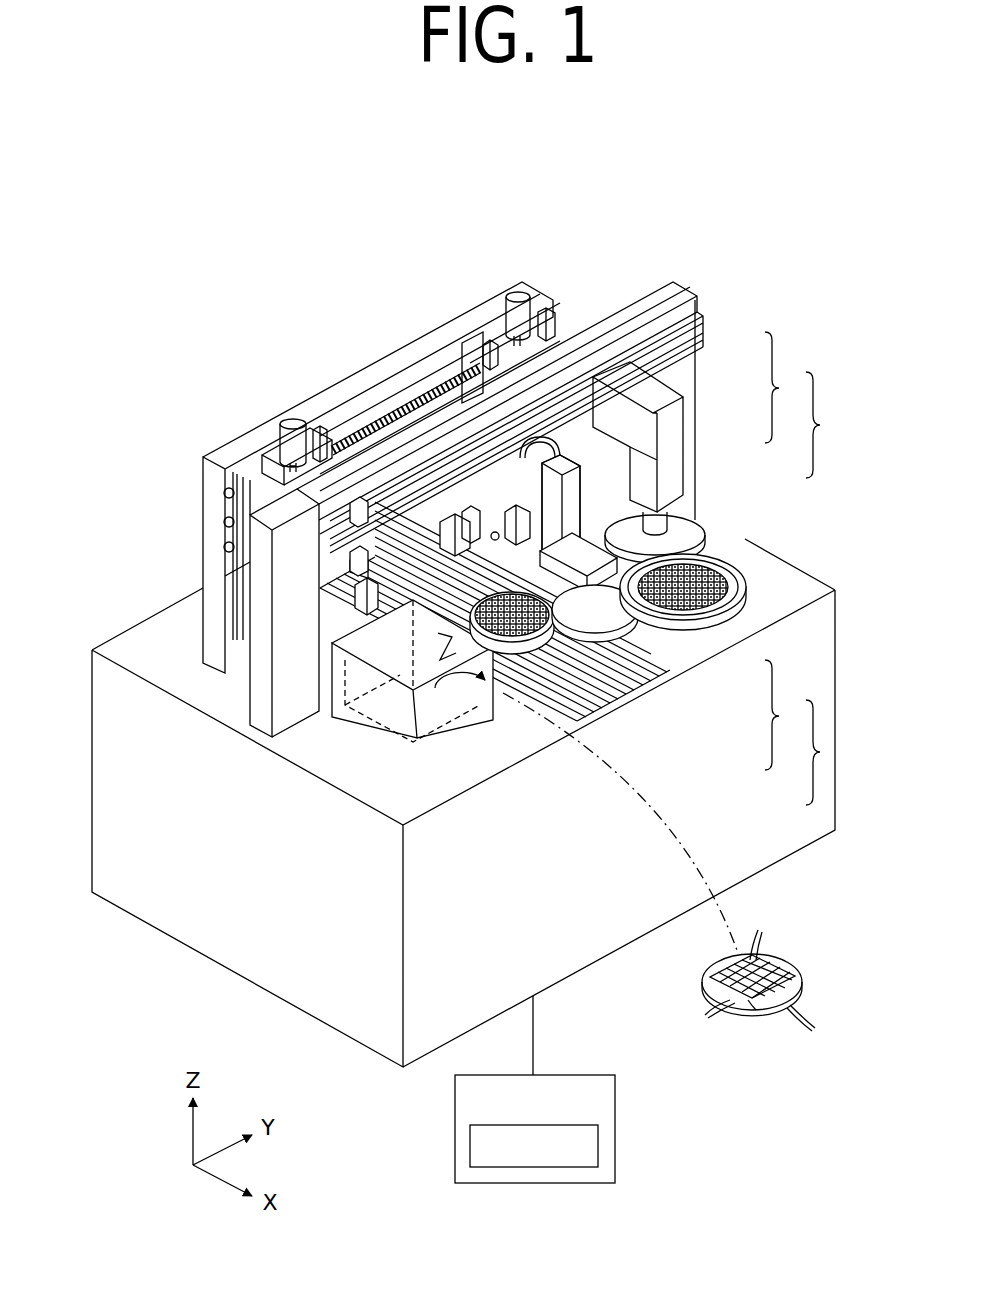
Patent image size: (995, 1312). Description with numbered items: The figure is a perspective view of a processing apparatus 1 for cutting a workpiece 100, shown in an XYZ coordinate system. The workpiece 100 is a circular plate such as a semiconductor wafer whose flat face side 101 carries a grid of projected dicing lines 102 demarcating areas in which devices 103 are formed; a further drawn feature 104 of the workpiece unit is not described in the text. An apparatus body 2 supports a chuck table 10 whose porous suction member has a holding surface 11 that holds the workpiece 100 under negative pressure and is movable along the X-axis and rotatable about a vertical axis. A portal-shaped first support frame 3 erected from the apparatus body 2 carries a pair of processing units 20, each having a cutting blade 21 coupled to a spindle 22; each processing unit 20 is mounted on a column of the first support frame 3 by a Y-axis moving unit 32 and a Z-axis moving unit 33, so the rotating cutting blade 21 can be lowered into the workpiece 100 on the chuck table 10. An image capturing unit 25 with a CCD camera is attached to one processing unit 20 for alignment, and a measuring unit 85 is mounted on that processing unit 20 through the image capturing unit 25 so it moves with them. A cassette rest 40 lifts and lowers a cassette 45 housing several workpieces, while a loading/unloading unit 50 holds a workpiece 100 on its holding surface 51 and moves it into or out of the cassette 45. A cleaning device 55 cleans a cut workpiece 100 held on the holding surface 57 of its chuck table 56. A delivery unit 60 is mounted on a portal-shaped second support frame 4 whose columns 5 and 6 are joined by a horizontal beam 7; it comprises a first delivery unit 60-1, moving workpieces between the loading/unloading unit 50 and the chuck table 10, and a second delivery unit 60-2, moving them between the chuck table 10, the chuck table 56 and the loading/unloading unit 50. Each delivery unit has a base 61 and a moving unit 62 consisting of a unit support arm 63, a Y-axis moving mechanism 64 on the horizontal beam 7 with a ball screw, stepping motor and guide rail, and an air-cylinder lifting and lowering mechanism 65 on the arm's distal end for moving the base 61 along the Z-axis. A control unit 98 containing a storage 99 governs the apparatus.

The processing apparatus 1 is at (723, 272).
The apparatus body 2 is at (152, 636).
The first support frame 3 is at (226, 458).
The second support frame 4 is at (651, 298).
The column 5 is at (258, 690).
The column 6 is at (587, 415).
The horizontal beam 7 is at (578, 346).
The chuck table 10 is at (590, 660).
The holding surface 11 is at (545, 655).
The processing unit 20 is at (467, 510).
The cutting blade 21 is at (440, 527).
The spindle 22 is at (453, 537).
The image capturing unit 25 is at (485, 512).
The Y-axis moving unit 32 is at (367, 410).
The Z-axis moving unit 33 is at (518, 297).
The cassette rest 40 is at (455, 770).
The cassette 45 is at (372, 722).
The loading/unloading unit 50 is at (530, 630).
The holding surface 51 is at (510, 690).
The cleaning device 55 is at (717, 562).
The chuck table 56 is at (700, 596).
The holding surface 57 is at (712, 582).
The delivery unit 60 is at (857, 588).
The first delivery unit 60-1 is at (857, 752).
The second delivery unit 60-2 is at (857, 425).
The base 61 is at (687, 533).
The moving unit 62 is at (782, 551).
The unit support arm 63 is at (668, 400).
The Y-axis moving mechanism 64 is at (690, 328).
The lifting and lowering mechanism 65 is at (657, 523).
The measuring unit 85 is at (518, 512).
The control unit 98 is at (616, 1092).
The storage 99 is at (598, 1142).
The workpiece 100 is at (763, 984).
The face side 101 is at (802, 992).
The projected dicing lines 102 is at (720, 1006).
The devices 103 is at (755, 927).
The annular frame 104 is at (752, 1010).